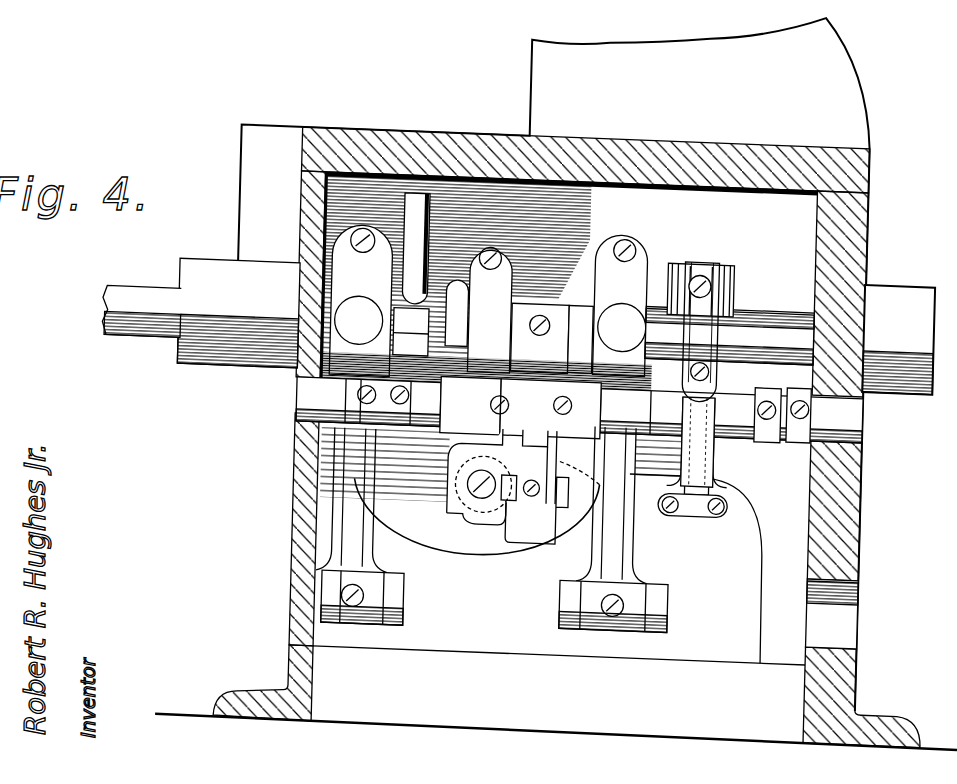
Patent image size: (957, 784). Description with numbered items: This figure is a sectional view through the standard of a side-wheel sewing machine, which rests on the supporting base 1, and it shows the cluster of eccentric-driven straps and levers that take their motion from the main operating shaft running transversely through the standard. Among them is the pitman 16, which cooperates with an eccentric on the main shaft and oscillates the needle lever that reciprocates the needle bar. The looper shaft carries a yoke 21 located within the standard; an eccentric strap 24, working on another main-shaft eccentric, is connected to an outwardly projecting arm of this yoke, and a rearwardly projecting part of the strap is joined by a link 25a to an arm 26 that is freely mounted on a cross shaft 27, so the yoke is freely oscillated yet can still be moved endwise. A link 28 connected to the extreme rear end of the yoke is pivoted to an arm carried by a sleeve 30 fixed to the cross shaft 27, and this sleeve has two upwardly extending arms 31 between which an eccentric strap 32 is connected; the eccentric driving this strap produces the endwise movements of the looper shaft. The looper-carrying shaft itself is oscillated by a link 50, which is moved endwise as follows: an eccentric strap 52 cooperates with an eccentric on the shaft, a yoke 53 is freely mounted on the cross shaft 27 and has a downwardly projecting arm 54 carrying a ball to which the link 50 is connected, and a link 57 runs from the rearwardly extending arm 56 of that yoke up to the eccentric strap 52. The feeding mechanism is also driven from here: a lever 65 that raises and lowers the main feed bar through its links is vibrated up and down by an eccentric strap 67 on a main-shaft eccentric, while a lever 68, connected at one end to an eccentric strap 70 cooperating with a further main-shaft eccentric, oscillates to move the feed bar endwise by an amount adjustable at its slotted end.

The supporting base 1 is at (874, 711).
The pitman 16 is at (410, 230).
The yoke 21 is at (451, 465).
The eccentric strap 24 is at (478, 286).
The link 25a is at (449, 305).
The arm 26 is at (489, 381).
The cross shaft 27 is at (307, 406).
The link 28 is at (556, 543).
The sleeve 30 is at (571, 382).
The upwardly extending arms 31 is at (490, 320).
The eccentric strap 32 is at (572, 322).
The link 50 is at (699, 512).
The eccentric strap 52 is at (698, 265).
The yoke 53 is at (739, 390).
The downwardly projecting arm 54 is at (718, 451).
The rearwardly extending arm 56 is at (723, 346).
The link 57 is at (734, 291).
The lever 65 is at (652, 607).
The eccentric strap 67 is at (633, 550).
The lever 68 is at (401, 602).
The eccentric strap 70 is at (348, 277).